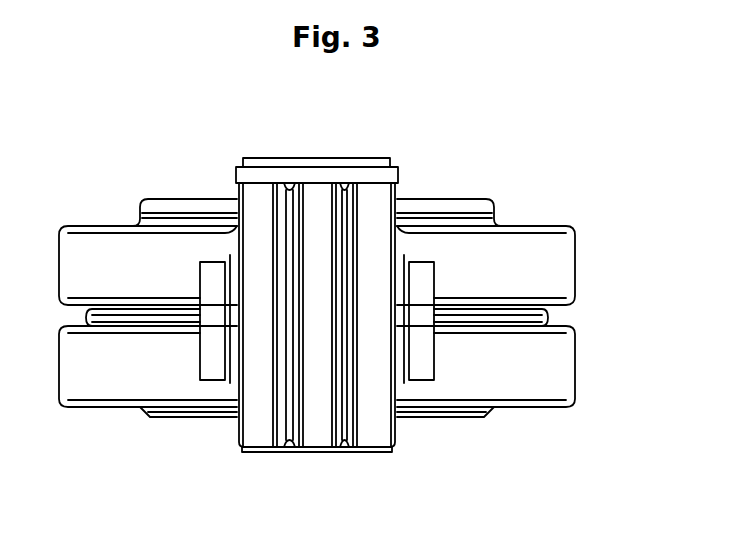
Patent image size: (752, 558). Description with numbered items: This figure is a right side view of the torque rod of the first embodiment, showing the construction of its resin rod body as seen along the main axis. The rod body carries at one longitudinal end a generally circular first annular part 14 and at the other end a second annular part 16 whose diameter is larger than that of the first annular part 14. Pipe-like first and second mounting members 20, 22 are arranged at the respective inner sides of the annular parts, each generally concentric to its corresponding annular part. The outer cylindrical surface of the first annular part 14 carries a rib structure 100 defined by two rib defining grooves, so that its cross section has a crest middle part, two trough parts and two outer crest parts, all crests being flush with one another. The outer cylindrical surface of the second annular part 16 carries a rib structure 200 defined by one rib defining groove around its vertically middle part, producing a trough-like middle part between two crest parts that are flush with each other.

The second mounting member 22 is at (423, 173).
The second annular part 16 is at (542, 368).
The rib structure 200 is at (540, 313).
The first mounting member 20 is at (207, 353).
The first annular part 14 is at (379, 427).
The rib structure 100 is at (319, 427).